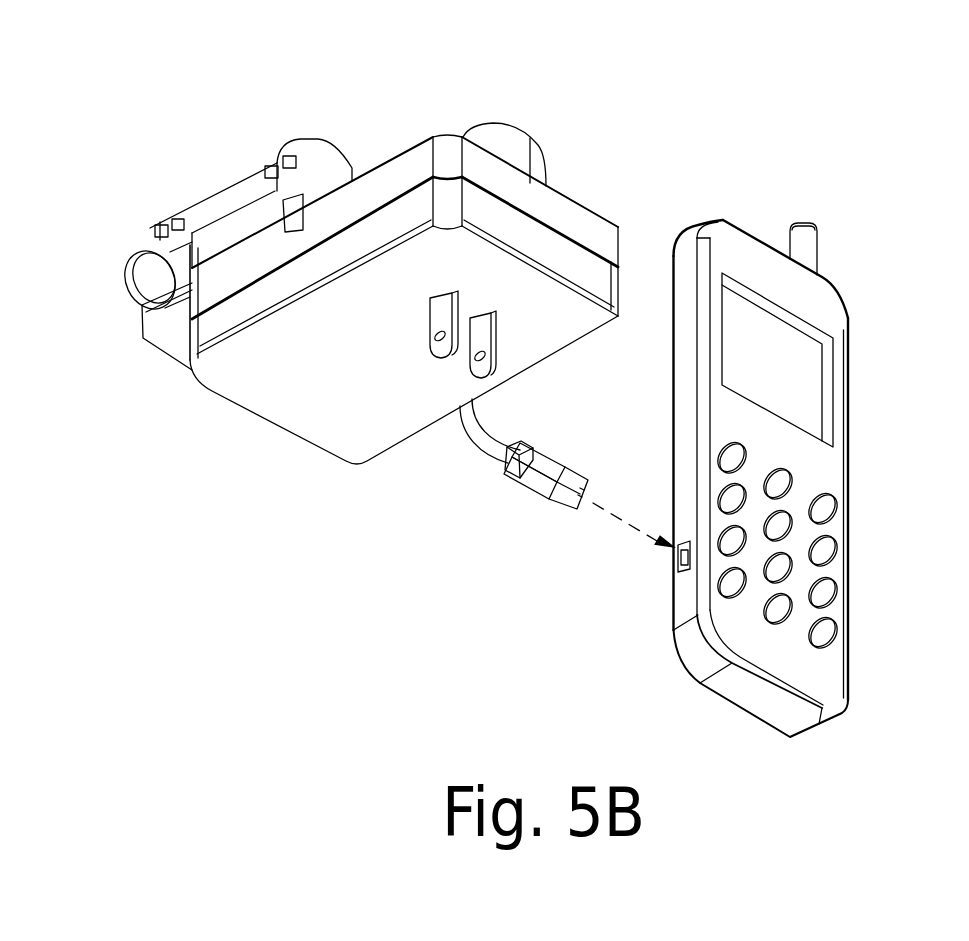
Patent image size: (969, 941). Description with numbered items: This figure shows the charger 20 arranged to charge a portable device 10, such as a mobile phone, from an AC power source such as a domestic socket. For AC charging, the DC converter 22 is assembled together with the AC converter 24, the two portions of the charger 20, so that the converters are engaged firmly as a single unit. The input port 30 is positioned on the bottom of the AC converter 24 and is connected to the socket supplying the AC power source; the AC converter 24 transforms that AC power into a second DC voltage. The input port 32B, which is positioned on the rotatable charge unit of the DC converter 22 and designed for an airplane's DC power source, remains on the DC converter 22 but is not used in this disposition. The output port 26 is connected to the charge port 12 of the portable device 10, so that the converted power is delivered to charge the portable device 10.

The portable device 10 is at (823, 472).
The charge port 12 is at (657, 567).
The charger 20 is at (413, 97).
The DC converter 22 is at (240, 179).
The AC converter 24 is at (298, 404).
The output port 26 is at (568, 505).
The input port 30 is at (478, 334).
The input port 32B is at (138, 268).